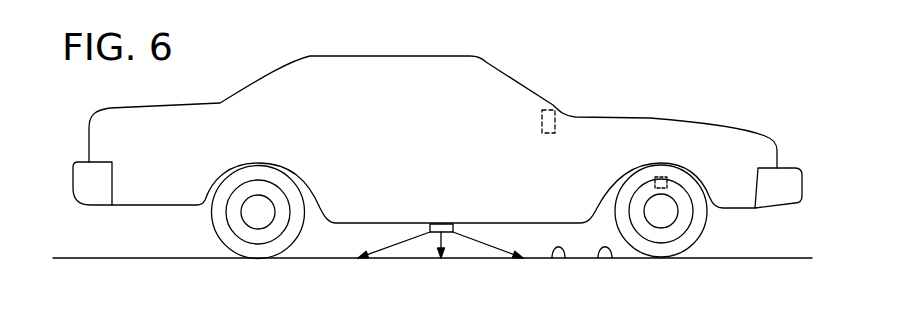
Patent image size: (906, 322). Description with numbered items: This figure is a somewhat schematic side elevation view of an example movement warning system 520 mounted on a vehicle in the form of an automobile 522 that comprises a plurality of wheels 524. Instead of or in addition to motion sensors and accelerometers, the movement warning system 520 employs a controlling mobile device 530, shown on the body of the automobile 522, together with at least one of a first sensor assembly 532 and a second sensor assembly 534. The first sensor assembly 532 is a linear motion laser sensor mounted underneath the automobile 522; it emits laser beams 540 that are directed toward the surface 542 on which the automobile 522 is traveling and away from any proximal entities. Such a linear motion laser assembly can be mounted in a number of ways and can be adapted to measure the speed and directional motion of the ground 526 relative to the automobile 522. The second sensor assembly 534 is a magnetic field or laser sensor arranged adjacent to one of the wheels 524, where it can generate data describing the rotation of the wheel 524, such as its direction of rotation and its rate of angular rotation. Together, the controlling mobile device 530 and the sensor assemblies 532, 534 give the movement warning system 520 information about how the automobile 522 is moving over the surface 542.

The movement warning system 520 is at (388, 263).
The automobile 522 is at (517, 75).
The wheels 524 is at (680, 247).
The ground 526 is at (612, 258).
The controlling mobile device 530 is at (553, 107).
The first sensor assembly 532 is at (445, 228).
The second sensor assembly 534 is at (667, 177).
The laser beams 540 is at (408, 240).
The surface 542 is at (565, 258).